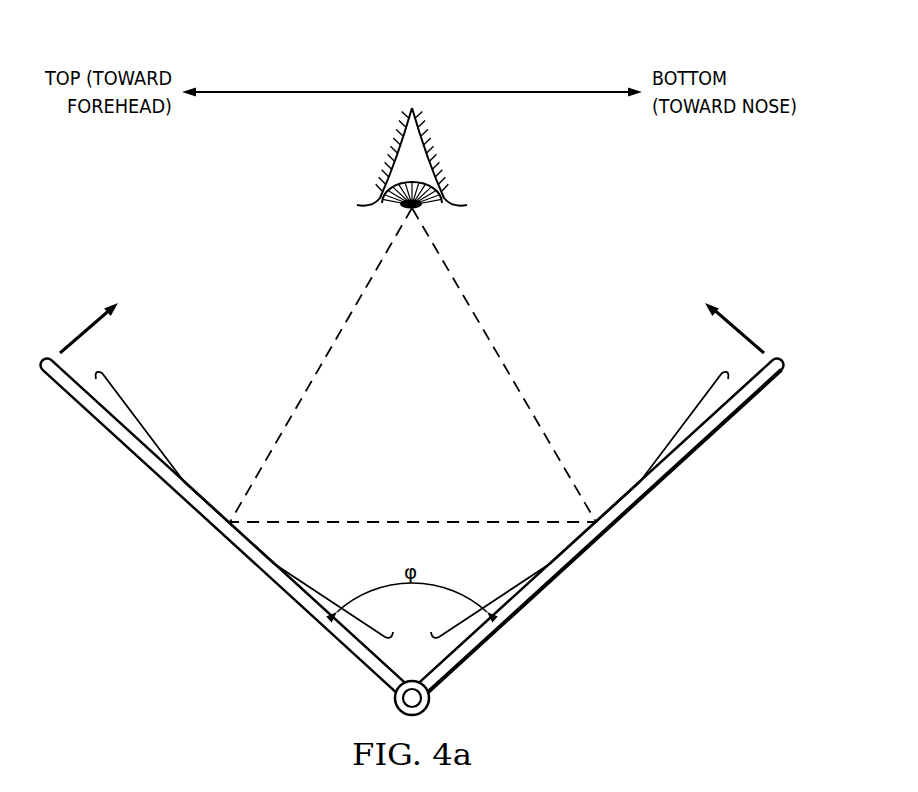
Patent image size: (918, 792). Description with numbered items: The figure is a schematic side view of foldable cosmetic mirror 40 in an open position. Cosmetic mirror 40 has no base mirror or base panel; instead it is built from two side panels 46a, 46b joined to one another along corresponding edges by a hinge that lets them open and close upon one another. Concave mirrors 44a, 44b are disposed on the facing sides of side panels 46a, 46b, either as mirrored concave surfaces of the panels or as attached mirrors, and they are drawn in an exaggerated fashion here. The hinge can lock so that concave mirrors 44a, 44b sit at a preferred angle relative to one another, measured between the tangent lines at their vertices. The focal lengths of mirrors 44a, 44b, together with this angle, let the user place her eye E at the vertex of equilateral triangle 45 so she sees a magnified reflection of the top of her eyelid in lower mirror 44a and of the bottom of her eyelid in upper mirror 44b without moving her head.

The eye E is at (385, 157).
The foldable cosmetic mirror 40 is at (411, 440).
The concave mirror 44a is at (702, 404).
The concave mirror 44b is at (122, 404).
The equilateral triangle 45 is at (321, 362).
The side panel 46a is at (262, 570).
The side panel 46b is at (562, 570).